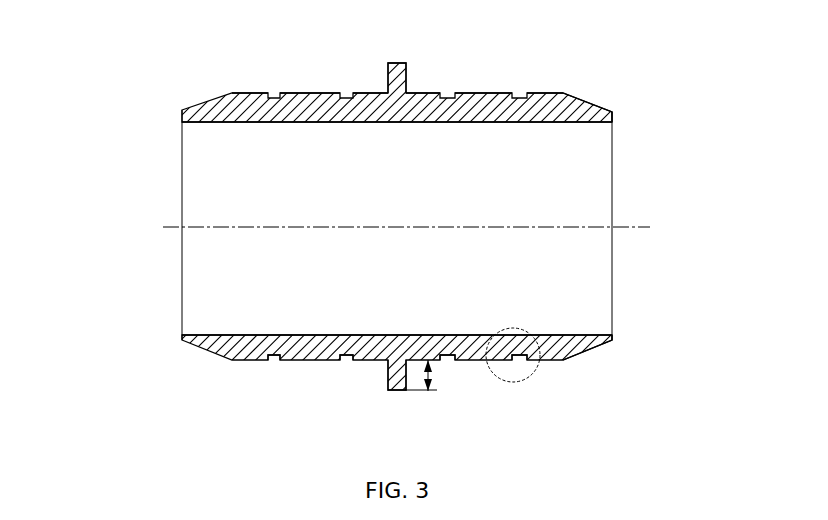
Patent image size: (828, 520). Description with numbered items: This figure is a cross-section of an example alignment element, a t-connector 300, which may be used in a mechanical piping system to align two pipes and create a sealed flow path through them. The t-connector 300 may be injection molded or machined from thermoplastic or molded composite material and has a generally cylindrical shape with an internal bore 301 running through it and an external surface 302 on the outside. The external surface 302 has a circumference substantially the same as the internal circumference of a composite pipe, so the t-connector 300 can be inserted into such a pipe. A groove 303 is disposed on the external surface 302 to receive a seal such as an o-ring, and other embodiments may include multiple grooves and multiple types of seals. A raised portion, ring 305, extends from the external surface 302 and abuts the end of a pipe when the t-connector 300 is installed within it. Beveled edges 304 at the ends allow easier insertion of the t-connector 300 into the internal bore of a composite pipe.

The t-connector 300 is at (210, 82).
The internal bore 301 is at (240, 122).
The external surface 302 is at (480, 90).
The groove 303 is at (337, 358).
The beveled edges 304 is at (587, 122).
The ring 305 is at (385, 66).